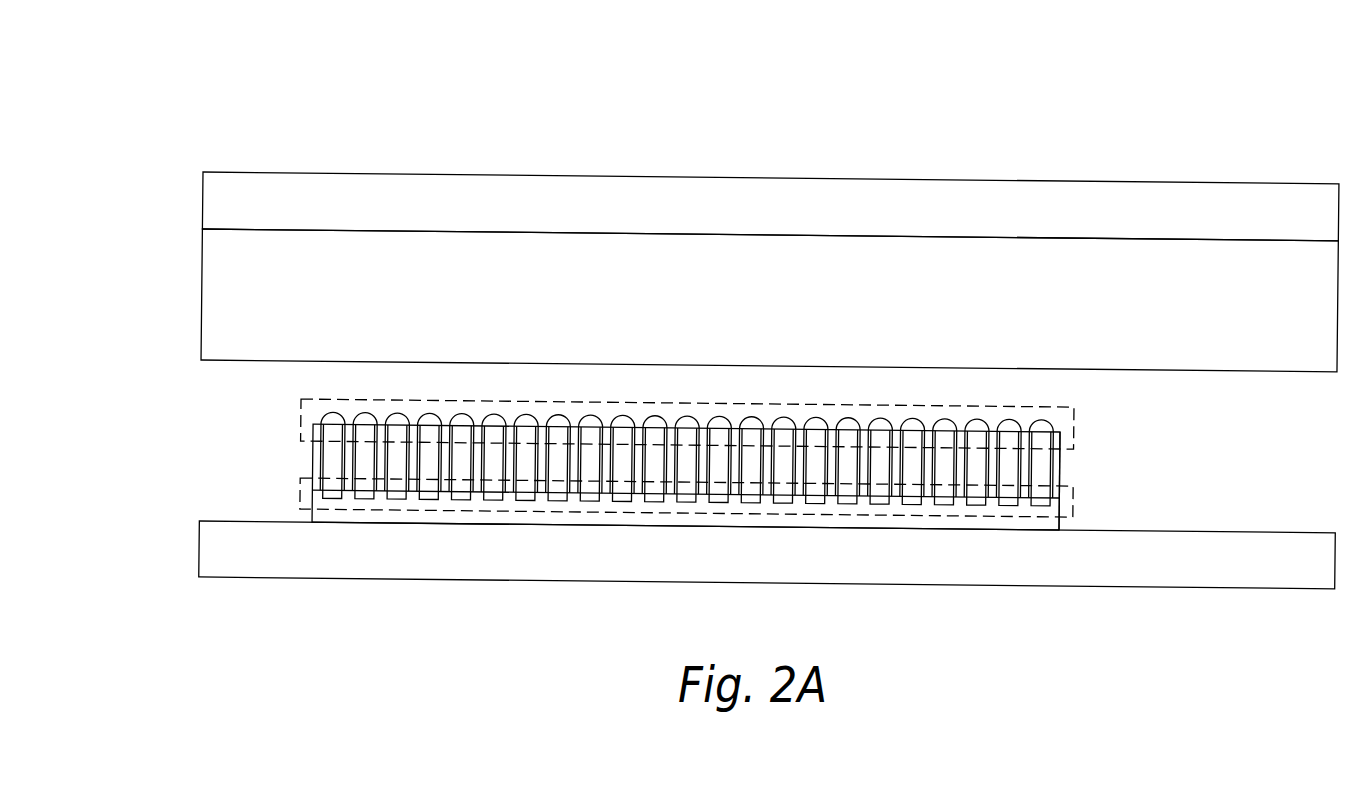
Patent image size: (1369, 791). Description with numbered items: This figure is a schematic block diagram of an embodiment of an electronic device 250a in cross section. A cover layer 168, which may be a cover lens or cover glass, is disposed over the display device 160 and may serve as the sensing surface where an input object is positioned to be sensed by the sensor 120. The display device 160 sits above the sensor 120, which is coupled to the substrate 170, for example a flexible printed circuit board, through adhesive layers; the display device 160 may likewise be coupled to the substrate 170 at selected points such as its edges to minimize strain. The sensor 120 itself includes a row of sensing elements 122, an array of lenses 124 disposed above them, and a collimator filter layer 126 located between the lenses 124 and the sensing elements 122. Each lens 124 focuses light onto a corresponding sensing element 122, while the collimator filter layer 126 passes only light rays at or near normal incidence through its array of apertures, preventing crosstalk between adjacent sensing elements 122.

The electronic device 250a is at (233, 106).
The cover layer 168 is at (211, 199).
The display device 160 is at (212, 287).
The substrate 170 is at (212, 548).
The sensor 120 is at (285, 458).
The lenses 124 is at (303, 402).
The sensing elements 122 is at (304, 492).
The collimator filter layer 126 is at (1097, 460).